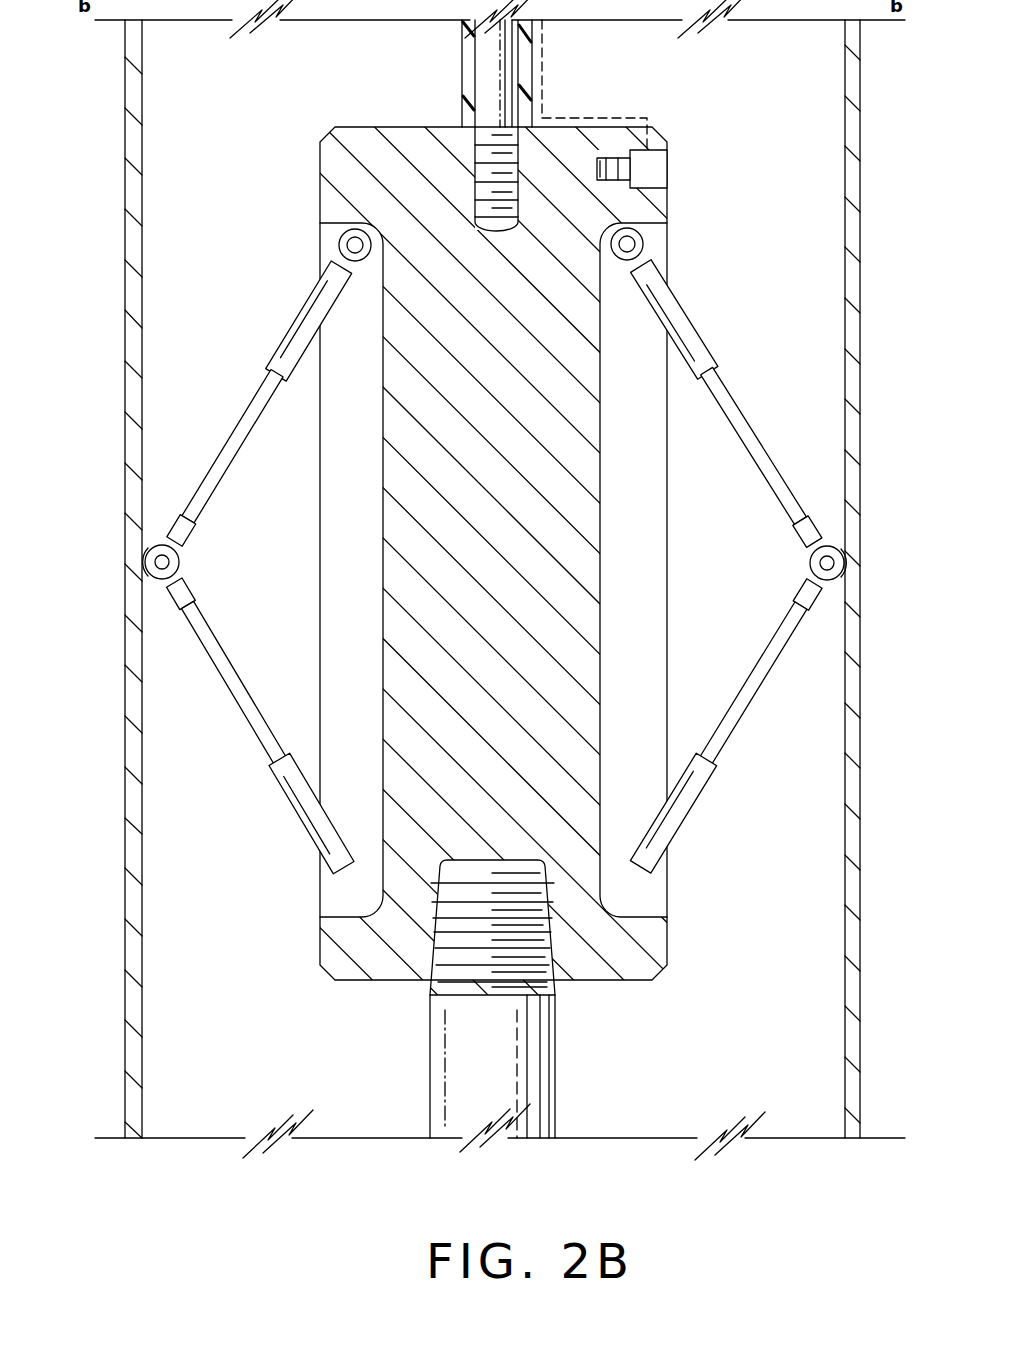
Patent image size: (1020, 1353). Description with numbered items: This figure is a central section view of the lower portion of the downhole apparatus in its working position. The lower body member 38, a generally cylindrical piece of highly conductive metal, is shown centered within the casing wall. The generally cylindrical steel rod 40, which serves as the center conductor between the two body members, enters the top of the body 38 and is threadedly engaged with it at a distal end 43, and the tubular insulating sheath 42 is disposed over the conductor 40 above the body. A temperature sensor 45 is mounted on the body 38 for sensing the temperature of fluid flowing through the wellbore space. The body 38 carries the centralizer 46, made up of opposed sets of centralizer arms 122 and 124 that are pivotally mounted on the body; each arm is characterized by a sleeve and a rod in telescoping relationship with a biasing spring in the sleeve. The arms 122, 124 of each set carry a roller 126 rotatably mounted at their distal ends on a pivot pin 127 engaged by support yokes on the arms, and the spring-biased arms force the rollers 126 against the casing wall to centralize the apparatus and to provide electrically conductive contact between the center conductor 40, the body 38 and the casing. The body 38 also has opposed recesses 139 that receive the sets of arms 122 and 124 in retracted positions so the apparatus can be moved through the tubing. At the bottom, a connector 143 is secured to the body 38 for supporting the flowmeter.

The body member 38 is at (667, 940).
The steel rod 40 is at (487, 75).
The tubular insulating sheath 42 is at (527, 63).
The distal end 43 is at (472, 178).
The temperature sensor 45 is at (660, 173).
The centralizer 46 is at (280, 343).
The centralizer arm 122 is at (228, 442).
The centralizer arm 124 is at (272, 790).
The roller 126 is at (150, 562).
The pivot pin 127 is at (175, 562).
The recess 139 is at (327, 226).
The connector 143 is at (545, 1066).